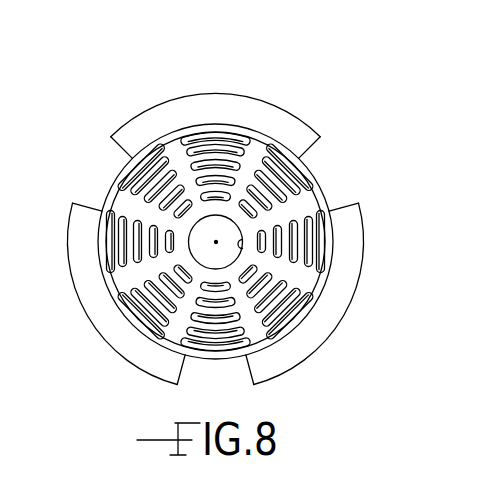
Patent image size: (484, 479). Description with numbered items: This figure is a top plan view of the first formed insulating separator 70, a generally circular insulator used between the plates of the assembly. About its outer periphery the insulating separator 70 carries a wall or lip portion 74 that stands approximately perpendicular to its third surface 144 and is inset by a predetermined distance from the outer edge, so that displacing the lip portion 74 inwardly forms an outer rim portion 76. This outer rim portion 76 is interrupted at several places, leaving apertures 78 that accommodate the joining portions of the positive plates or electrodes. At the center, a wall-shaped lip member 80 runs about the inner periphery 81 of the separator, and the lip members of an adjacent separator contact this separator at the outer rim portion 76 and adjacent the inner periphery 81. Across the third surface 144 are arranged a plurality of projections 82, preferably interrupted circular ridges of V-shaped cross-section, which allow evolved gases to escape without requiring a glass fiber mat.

The insulating separator 70 is at (228, 237).
The third surface 144 is at (178, 152).
The lip portion 74 is at (315, 190).
The outer rim portion 76 is at (247, 118).
The apertures 78 is at (323, 162).
The lip member 80 is at (230, 233).
The inner periphery 81 is at (243, 241).
The projections 82 is at (280, 310).